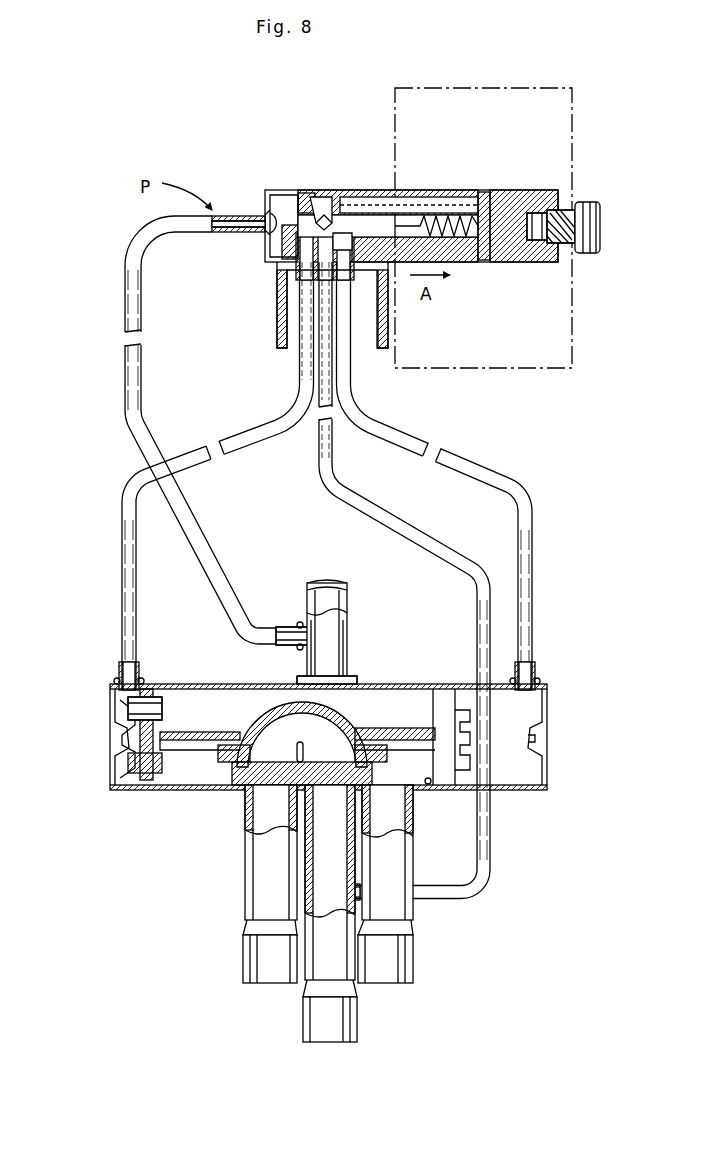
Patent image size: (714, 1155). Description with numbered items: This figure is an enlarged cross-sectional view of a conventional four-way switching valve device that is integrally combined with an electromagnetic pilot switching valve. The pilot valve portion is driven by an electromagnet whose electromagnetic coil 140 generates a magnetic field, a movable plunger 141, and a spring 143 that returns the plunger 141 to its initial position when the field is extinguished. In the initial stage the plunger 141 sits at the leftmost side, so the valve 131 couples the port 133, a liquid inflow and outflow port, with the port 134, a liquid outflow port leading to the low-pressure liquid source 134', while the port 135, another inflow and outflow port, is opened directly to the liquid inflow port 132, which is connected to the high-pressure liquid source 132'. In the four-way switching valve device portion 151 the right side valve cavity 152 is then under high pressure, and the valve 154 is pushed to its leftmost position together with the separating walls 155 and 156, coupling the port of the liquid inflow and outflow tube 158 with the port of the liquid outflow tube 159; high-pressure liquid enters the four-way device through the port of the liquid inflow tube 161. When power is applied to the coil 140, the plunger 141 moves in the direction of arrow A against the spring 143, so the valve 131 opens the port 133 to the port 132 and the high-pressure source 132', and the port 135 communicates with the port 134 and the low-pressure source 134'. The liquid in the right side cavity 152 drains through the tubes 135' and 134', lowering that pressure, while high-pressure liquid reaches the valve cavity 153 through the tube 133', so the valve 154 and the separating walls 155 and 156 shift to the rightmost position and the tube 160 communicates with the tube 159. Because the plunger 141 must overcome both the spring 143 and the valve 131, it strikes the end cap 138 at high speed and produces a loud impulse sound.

The valve 131 is at (358, 192).
The liquid inflow port 132 is at (237, 249).
The port 133 is at (271, 178).
The port 134 is at (304, 190).
The port 135 is at (331, 195).
The end cap 138 is at (525, 262).
The electromagnetic coil 140 is at (548, 370).
The plunger 141 is at (405, 190).
The spring 143 is at (440, 222).
The high-pressure liquid source 132' is at (186, 433).
The tube 133' is at (187, 476).
The low-pressure liquid source 134' is at (452, 581).
The tube 135' is at (465, 476).
The four-way switching valve device portion 151 is at (390, 684).
The right side valve cavity 152 is at (522, 785).
The valve cavity 153 is at (133, 778).
The valve 154 is at (265, 712).
The separating wall 155 is at (447, 782).
The separating wall 156 is at (163, 760).
The liquid inflow and outflow tube 158 is at (255, 856).
The liquid outflow tube 159 is at (305, 1012).
The tube 160 is at (413, 956).
The liquid inflow tube 161 is at (347, 604).